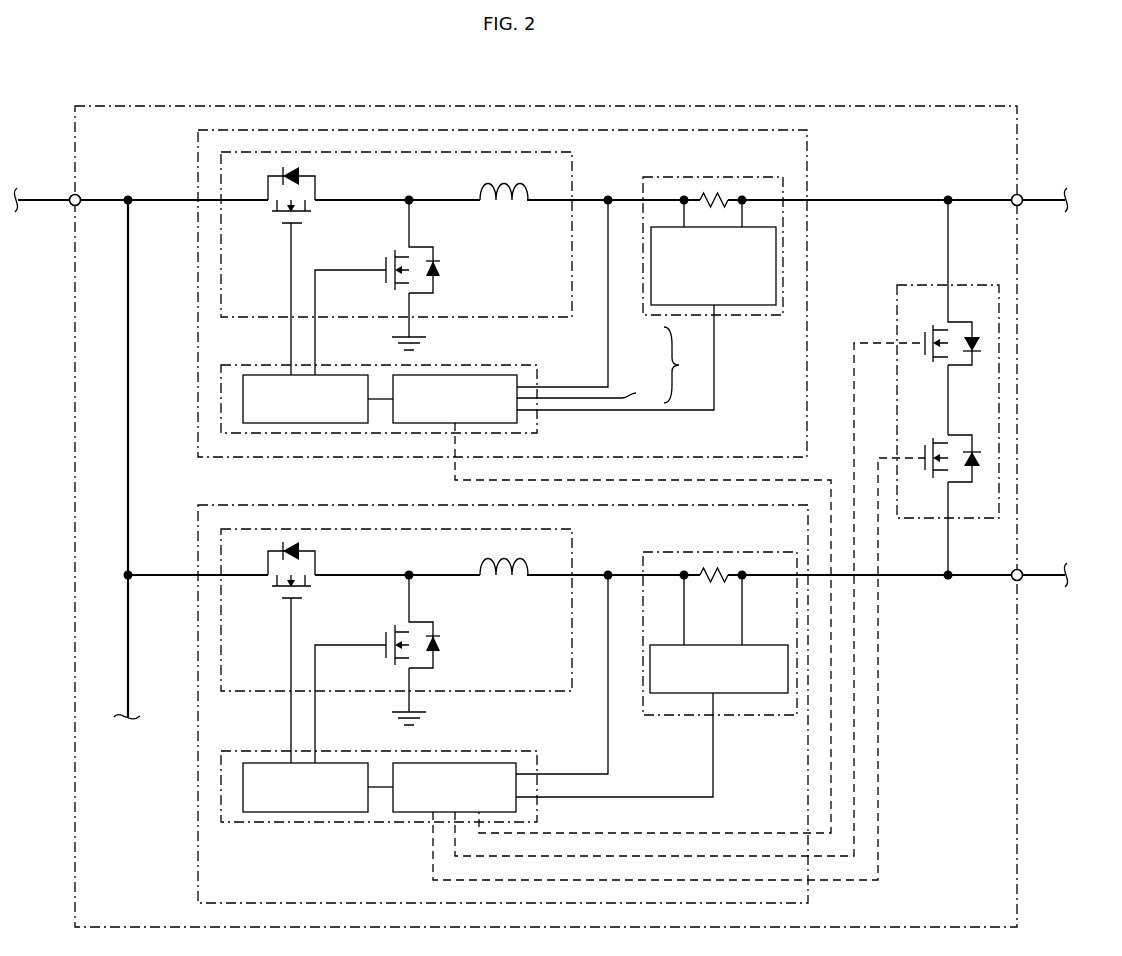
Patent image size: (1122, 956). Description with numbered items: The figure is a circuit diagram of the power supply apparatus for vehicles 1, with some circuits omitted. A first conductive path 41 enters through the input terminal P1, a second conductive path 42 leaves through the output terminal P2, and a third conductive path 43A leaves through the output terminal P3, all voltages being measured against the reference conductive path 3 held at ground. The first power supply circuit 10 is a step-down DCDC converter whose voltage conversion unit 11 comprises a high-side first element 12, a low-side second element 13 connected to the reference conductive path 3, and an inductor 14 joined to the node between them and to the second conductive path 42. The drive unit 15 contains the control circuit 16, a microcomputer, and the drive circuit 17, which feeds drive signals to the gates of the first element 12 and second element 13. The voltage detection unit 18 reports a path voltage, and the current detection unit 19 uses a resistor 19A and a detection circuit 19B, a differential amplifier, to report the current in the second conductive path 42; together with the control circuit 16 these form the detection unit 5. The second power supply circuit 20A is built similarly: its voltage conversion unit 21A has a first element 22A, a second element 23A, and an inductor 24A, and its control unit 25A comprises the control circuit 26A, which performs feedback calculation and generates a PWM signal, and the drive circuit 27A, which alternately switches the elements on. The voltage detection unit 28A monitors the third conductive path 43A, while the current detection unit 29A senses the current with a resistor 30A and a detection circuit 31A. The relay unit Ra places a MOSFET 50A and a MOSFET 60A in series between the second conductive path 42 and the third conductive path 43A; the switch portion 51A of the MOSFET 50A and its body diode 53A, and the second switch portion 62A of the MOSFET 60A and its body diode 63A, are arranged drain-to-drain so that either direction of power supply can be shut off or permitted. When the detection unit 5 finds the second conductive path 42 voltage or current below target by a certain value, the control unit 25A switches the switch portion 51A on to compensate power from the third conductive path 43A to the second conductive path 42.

The power supply apparatus for vehicles 1 is at (985, 106).
The first power supply circuit 10 is at (807, 152).
The voltage conversion unit 11 is at (575, 183).
The first element 12 is at (272, 209).
The second element 13 is at (403, 254).
The inductor 14 is at (505, 205).
The reference conductive path 3 is at (413, 336).
The drive unit 15 is at (510, 365).
The control circuit 16 is at (528, 399).
The drive circuit 17 is at (243, 403).
The voltage detection unit 18 is at (608, 362).
The current detection unit 19 is at (643, 285).
The resistor 19A is at (710, 196).
The detection circuit 19B is at (742, 306).
The detection unit 5 is at (680, 365).
The first conductive path 41 is at (160, 198).
The second conductive path 42 is at (660, 198).
The third conductive path 43A is at (657, 575).
The input terminal P1 is at (70, 205).
The output terminal P2 is at (1022, 204).
The output terminal P3 is at (1022, 579).
The second power supply circuit 20A is at (196, 833).
The voltage conversion unit 21A is at (575, 557).
The first element 22A is at (272, 585).
The second element 23A is at (403, 628).
The inductor 24A is at (505, 580).
The control unit 25A is at (497, 751).
The control circuit 26A is at (410, 812).
The drive circuit 27A is at (265, 812).
The voltage detection unit 28A is at (608, 753).
The current detection unit 29A is at (763, 715).
The resistor 30A is at (712, 570).
The detection circuit 31A is at (758, 645).
The relay unit Ra is at (999, 330).
The MOSFET 50A is at (960, 304).
The switch portion 51A is at (943, 360).
The diode 53A is at (978, 345).
The MOSFET 60A is at (962, 419).
The second switch portion 62A is at (943, 483).
The diode 63A is at (980, 458).